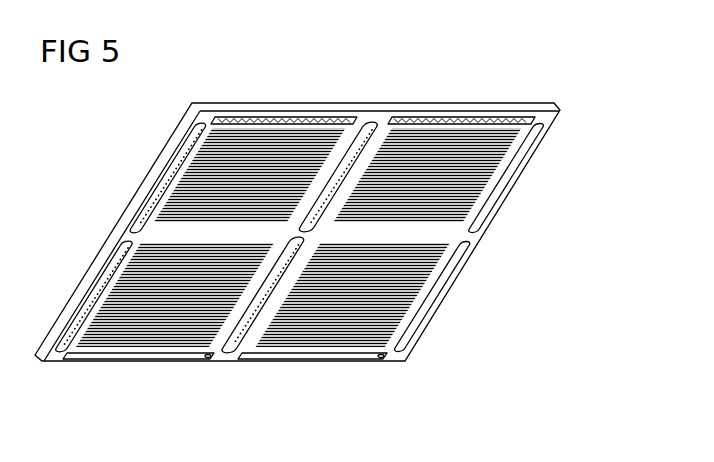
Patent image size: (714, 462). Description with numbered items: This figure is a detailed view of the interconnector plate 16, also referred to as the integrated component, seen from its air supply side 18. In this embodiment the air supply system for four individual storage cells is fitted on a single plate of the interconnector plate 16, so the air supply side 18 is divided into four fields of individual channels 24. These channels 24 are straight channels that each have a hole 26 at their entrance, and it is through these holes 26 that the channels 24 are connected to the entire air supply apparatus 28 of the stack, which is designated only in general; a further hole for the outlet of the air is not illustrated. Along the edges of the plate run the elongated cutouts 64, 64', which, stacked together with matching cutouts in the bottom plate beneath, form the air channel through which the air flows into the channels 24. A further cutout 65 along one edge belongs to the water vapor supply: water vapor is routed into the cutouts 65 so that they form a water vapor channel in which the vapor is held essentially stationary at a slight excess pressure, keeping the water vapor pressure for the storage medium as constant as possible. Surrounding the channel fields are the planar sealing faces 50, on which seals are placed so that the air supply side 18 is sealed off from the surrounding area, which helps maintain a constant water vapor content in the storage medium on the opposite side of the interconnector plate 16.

The interconnector plate 16 is at (393, 359).
The air supply side 18 is at (428, 287).
The channels 24 is at (455, 140).
The holes 26 is at (373, 124).
The air supply apparatus 28 is at (357, 148).
The planar sealing faces 50 is at (224, 362).
The cutouts 64 is at (168, 174).
The cutouts 64' is at (332, 146).
The cutouts 65 is at (258, 117).